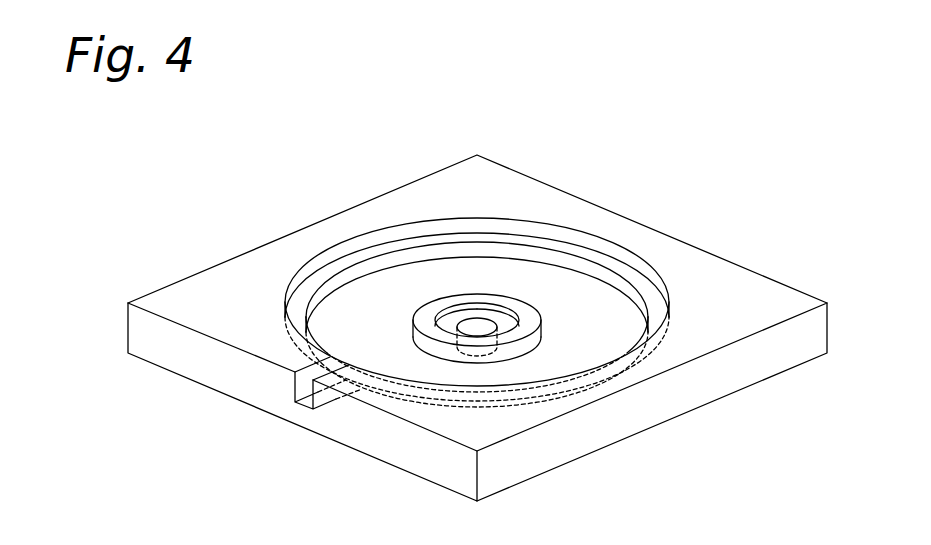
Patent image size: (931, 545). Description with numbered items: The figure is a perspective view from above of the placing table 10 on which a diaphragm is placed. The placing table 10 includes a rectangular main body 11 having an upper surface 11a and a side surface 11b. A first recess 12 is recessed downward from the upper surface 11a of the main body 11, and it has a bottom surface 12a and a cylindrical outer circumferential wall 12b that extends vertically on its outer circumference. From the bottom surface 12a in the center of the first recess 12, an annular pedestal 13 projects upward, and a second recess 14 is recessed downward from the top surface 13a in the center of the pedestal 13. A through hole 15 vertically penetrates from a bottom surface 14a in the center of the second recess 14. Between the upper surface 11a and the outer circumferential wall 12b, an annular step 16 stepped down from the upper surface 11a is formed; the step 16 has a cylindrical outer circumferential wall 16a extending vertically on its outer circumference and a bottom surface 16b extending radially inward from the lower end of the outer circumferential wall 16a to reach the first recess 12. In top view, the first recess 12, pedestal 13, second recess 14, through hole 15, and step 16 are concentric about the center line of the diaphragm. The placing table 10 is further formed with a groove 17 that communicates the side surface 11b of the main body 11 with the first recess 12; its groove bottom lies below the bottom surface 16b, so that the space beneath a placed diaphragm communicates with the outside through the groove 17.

The placing table 10 is at (219, 236).
The main body 11 is at (197, 303).
The upper surface 11a is at (267, 258).
The side surface 11b is at (223, 373).
The first recess 12 is at (657, 190).
The bottom surface 12a is at (567, 283).
The outer circumferential wall 12b is at (587, 265).
The pedestal 13 is at (412, 330).
The top surface 13a is at (421, 313).
The second recess 14 is at (462, 307).
The bottom surface 14a is at (500, 305).
The through hole 15 is at (477, 322).
The step 16 is at (667, 175).
The outer circumferential wall 16a is at (662, 278).
The bottom surface 16b is at (633, 257).
The groove 17 is at (295, 407).